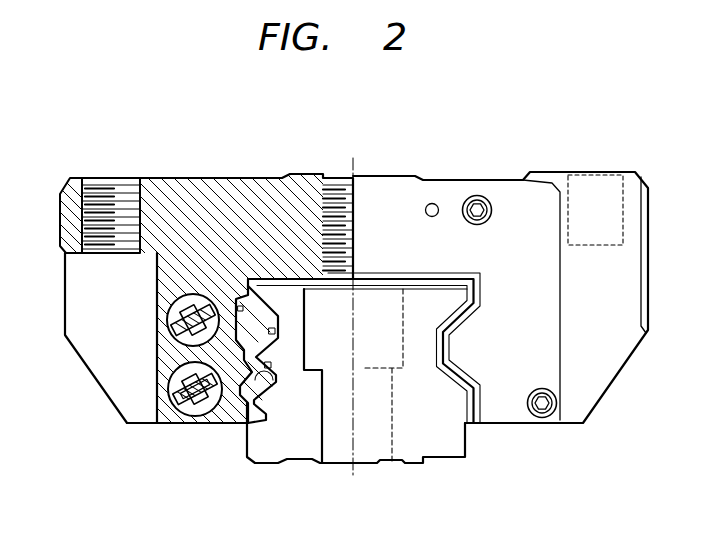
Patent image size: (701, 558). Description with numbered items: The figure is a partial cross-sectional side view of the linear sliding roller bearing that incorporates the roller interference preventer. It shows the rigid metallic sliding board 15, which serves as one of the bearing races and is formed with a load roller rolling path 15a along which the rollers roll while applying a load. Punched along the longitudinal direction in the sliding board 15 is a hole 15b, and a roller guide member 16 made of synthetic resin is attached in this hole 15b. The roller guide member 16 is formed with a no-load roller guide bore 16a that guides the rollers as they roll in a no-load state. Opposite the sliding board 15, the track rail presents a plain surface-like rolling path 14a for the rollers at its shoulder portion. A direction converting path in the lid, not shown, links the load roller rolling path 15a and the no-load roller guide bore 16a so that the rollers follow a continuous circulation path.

The rolling path 14a is at (254, 388).
The sliding board 15 is at (277, 179).
The load roller rolling path 15a is at (253, 322).
The hole 15b is at (187, 420).
The roller guide member 16 is at (172, 296).
The no-load roller guide bore 16a is at (170, 387).